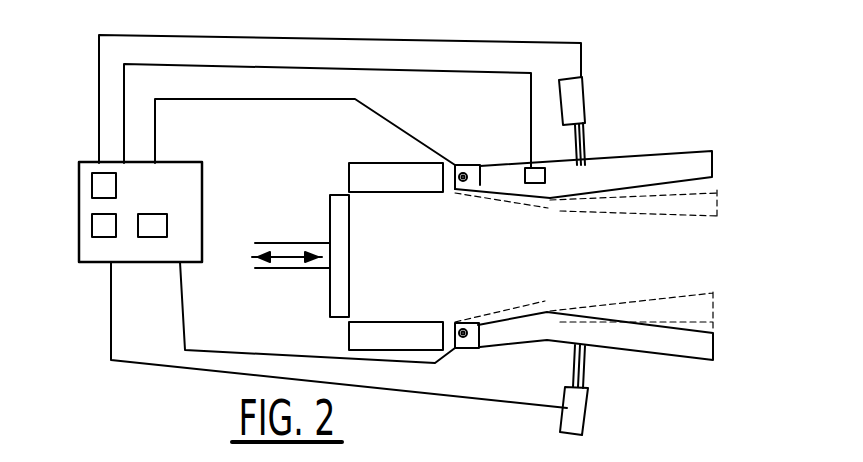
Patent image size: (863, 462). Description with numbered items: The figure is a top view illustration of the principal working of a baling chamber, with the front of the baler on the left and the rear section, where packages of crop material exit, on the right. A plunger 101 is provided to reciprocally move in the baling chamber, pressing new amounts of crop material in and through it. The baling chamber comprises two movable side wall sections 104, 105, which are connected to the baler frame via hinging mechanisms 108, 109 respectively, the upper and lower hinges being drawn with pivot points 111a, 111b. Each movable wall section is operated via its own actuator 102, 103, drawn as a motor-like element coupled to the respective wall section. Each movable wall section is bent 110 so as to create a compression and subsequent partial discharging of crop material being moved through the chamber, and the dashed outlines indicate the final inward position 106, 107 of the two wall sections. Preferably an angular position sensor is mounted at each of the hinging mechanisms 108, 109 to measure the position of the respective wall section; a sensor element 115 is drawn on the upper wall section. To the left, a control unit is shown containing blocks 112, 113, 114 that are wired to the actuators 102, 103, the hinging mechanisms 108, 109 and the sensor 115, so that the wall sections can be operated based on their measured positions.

The plunger 101 is at (337, 230).
The actuator 102 is at (578, 98).
The actuator 103 is at (577, 411).
The movable side wall section 104 is at (705, 163).
The movable side wall section 105 is at (702, 343).
The final inward position 106 is at (703, 205).
The final inward position 107 is at (708, 305).
The hinging mechanism 108 is at (470, 165).
The hinging mechanism 109 is at (464, 338).
The bend 110 is at (547, 198).
The first pivot axis 111a is at (480, 168).
The second pivot axis 111b is at (477, 343).
The processor 112 is at (102, 183).
The memory 113 is at (103, 227).
The input/output interface 114 is at (150, 228).
The sensor 115 is at (543, 169).